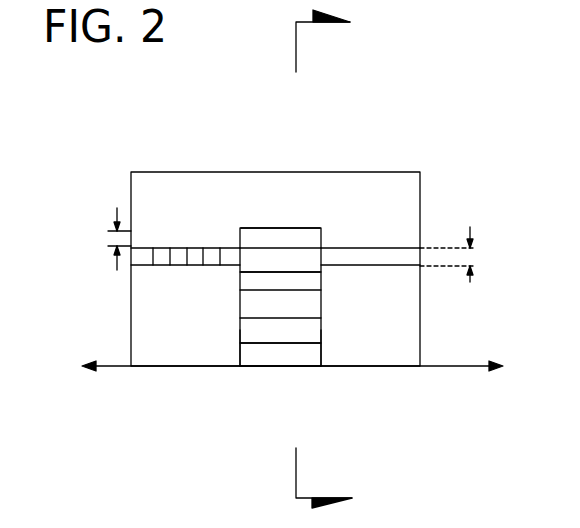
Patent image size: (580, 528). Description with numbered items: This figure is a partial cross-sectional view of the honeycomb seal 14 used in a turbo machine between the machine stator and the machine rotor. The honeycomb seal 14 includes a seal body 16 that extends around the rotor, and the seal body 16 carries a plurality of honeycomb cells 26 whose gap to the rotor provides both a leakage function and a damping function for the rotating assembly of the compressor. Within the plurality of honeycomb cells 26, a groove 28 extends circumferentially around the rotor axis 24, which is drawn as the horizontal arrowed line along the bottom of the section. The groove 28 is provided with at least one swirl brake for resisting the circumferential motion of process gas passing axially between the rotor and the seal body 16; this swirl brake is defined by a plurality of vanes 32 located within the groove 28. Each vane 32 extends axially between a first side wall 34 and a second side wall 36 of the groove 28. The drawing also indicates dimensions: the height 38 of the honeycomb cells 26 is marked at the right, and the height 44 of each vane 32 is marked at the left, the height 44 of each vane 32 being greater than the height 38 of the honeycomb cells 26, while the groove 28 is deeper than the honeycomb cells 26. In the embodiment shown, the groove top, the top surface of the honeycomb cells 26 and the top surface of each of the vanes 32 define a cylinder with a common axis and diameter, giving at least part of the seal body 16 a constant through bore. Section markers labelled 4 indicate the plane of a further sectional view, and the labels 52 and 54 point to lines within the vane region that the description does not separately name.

The section line 4- 4 is at (347, 264).
The honeycomb seal 14 is at (145, 157).
The seal body 16 is at (408, 188).
The rotor axis 24 is at (307, 394).
The honeycomb cells 26 is at (384, 250).
The groove 28 is at (322, 303).
The vanes 32 is at (264, 233).
The first side wall 34 is at (238, 330).
The second side wall 36 is at (322, 337).
The height of honeycomb cells 38 is at (475, 258).
The height of vane 44 is at (112, 239).
The intermediate layer 52 is at (285, 270).
The interface line 54 is at (268, 292).